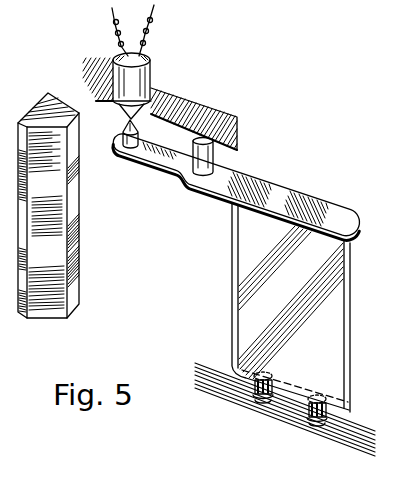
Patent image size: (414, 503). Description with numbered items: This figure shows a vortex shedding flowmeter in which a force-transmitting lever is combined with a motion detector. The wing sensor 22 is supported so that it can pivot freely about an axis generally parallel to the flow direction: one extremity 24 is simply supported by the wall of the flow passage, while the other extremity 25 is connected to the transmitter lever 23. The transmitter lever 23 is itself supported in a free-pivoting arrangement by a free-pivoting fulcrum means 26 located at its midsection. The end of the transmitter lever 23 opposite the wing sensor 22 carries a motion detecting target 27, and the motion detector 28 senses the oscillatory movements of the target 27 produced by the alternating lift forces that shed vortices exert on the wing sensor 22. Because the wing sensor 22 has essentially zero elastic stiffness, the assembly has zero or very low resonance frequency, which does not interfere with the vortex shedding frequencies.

The wing sensor 22 is at (292, 293).
The transmitter lever 23 is at (275, 197).
The extremity of the wing sensor 24 is at (295, 388).
The other extremity of the wing sensor 25 is at (318, 229).
The free-pivoting fulcrum means 26 is at (213, 164).
The motion detecting target 27 is at (124, 122).
The motion detector 28 is at (133, 85).